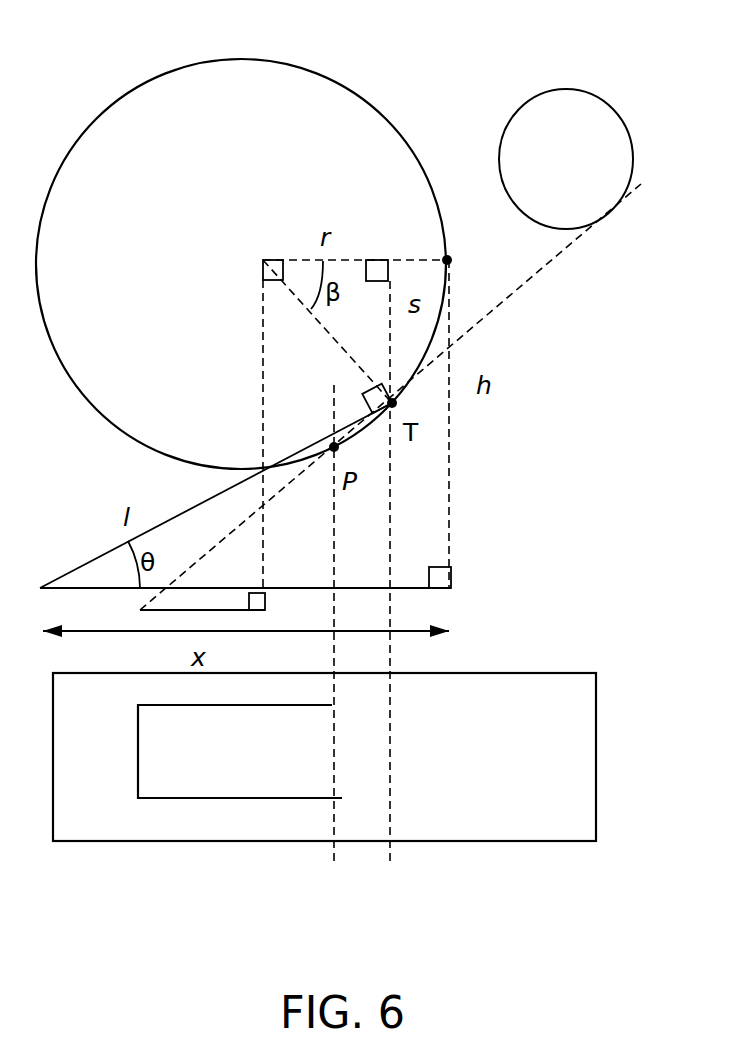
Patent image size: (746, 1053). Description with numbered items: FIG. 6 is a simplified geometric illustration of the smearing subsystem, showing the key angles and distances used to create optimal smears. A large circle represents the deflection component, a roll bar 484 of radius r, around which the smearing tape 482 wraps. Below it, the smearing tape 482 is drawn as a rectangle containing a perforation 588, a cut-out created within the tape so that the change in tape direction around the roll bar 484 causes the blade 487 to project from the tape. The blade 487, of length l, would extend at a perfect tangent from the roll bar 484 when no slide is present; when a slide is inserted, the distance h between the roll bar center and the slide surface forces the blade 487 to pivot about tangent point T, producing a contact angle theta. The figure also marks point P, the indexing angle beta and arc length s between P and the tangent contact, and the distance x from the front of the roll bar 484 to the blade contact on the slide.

The roll bar 484 is at (332, 78).
The smearing tape 482 is at (580, 698).
The perforation 588 is at (208, 799).
The blade 487 is at (203, 755).